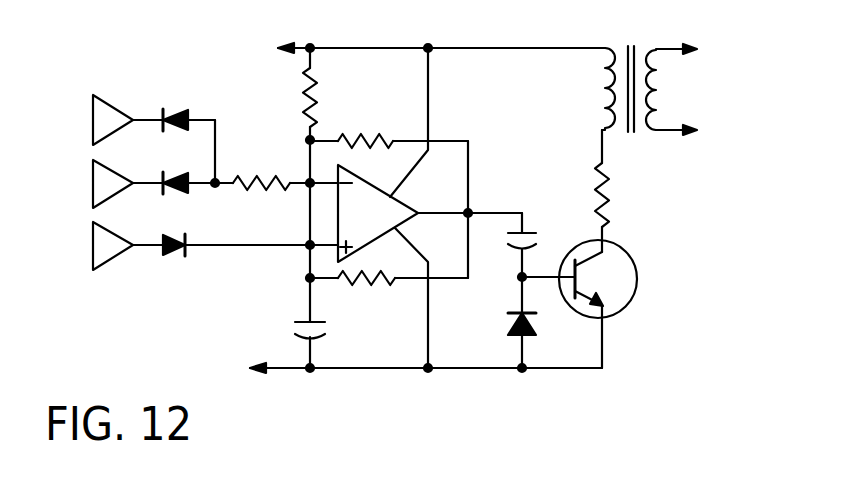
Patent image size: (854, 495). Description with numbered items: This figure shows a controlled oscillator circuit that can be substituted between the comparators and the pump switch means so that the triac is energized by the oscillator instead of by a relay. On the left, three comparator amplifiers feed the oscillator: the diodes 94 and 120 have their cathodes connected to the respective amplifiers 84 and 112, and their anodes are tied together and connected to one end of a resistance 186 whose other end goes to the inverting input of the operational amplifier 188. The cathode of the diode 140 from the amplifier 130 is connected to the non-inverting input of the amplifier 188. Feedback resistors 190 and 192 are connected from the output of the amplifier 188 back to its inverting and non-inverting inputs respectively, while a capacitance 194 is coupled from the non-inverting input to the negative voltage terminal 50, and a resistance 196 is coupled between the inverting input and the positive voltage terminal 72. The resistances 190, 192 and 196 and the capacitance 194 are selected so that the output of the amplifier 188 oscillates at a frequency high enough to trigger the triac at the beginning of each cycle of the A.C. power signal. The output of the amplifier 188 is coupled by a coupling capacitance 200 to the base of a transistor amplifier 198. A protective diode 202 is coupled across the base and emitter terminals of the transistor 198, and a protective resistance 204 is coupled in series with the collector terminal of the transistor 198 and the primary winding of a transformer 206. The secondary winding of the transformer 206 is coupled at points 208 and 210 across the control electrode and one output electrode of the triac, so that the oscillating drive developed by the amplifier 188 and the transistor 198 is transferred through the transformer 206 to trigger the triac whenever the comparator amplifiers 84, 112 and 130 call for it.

The negative voltage terminal 50 is at (503, 372).
The positive voltage terminal 72 is at (385, 47).
The amplifier 84 is at (120, 173).
The diode 94 is at (180, 192).
The amplifier 112 is at (125, 116).
The diode 120 is at (187, 112).
The amplifier 130 is at (113, 235).
The diode 140 is at (178, 255).
The resistance 186 is at (248, 178).
The operational amplifier 188 is at (407, 207).
The feedback resistor 190 is at (350, 136).
The feedback resistor 192 is at (355, 287).
The capacitance 194 is at (293, 330).
The resistance 196 is at (302, 114).
The transistor amplifier 198 is at (625, 286).
The coupling capacitance 200 is at (511, 245).
The protective diode 202 is at (508, 330).
The protective resistance 204 is at (613, 180).
The transformer 206 is at (631, 45).
The secondary winding coupling point 208 is at (686, 45).
The secondary winding coupling point 210 is at (686, 106).